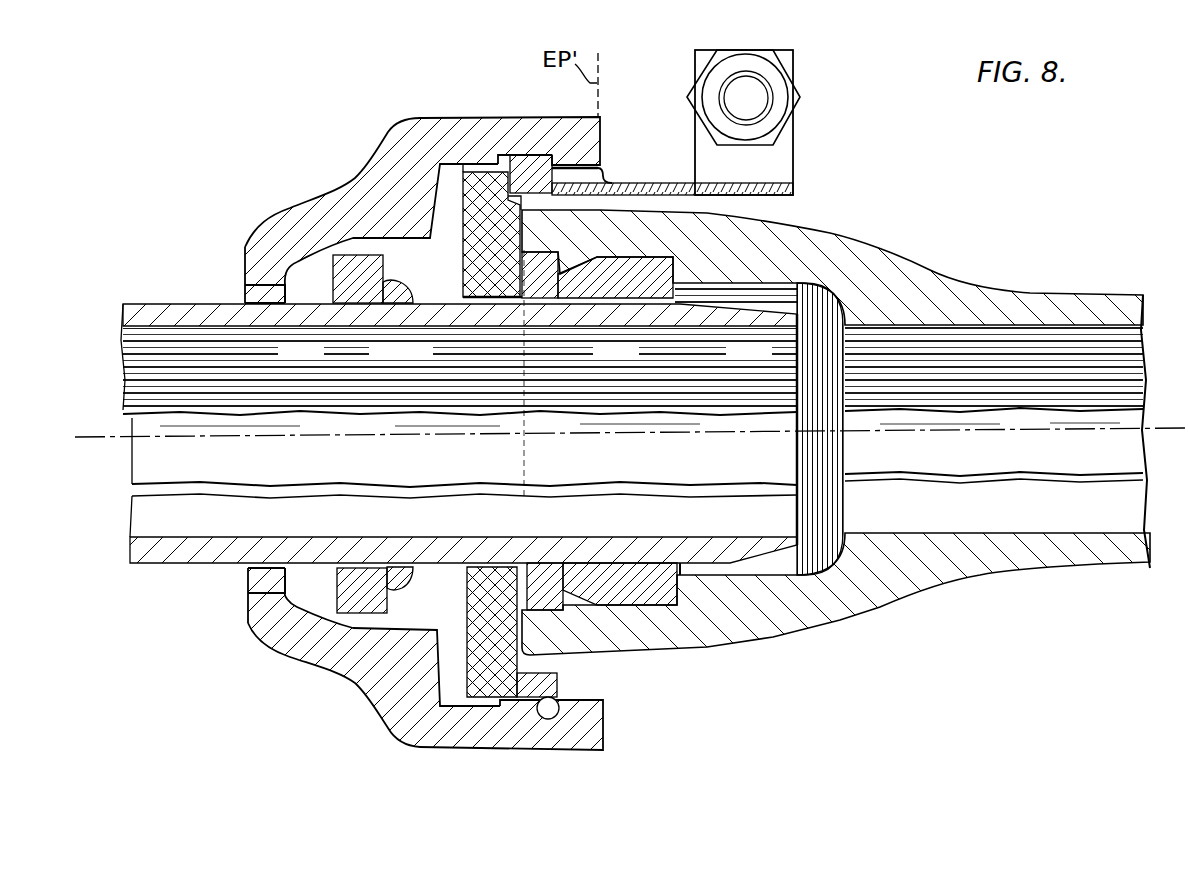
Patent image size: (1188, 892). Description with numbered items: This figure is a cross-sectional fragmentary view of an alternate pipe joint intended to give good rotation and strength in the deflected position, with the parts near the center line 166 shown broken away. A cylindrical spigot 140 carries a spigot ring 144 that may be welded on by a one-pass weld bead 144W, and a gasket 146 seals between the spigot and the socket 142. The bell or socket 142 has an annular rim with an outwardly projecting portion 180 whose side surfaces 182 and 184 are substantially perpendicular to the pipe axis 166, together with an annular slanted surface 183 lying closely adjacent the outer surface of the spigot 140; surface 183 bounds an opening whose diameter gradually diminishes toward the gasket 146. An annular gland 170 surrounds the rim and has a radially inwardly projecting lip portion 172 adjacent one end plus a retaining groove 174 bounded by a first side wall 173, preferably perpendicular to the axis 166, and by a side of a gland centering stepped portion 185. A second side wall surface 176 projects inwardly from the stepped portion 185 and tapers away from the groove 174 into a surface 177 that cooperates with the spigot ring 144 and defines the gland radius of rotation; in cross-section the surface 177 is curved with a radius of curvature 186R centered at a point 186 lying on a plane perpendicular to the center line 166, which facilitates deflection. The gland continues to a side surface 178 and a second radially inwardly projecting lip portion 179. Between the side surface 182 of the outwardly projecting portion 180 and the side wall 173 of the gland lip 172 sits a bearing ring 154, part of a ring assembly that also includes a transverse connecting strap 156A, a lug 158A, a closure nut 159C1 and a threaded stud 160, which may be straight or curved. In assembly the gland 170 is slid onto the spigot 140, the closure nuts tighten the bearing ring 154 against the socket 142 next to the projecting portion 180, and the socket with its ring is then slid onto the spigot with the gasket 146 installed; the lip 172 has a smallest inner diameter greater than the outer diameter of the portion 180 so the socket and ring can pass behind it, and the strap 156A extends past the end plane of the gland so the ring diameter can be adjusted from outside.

The spigot 140 is at (723, 328).
The socket (bell) 142 is at (865, 250).
The spigot ring 144 is at (320, 307).
The weld bead 144W is at (392, 305).
The gasket 146 is at (633, 298).
The bearing ring 154 is at (603, 177).
The transverse connecting strap 156A is at (618, 183).
The lug 158A is at (796, 164).
The closure nut 159C1 is at (803, 98).
The threaded stud 160 is at (733, 90).
The center line (pipe axis) 166 is at (748, 433).
The annular gland 170 is at (383, 143).
The radially inwardly projecting lip portion 172 is at (603, 166).
The first side wall 173 is at (535, 152).
The retaining groove 174 is at (498, 153).
The second side wall surface 176 is at (450, 160).
The curved surface 177 is at (322, 262).
The side surface 178 is at (245, 262).
The radially inwardly projecting lip portion 179 is at (244, 300).
The outwardly projecting portion 180 is at (462, 160).
The side surface 182 is at (519, 207).
The annular slanted surface 183 is at (463, 297).
The side surface 184 is at (455, 225).
The gland centering stepped portion 185 is at (463, 195).
The center point 186 is at (513, 408).
The radius of curvature 186R is at (350, 248).